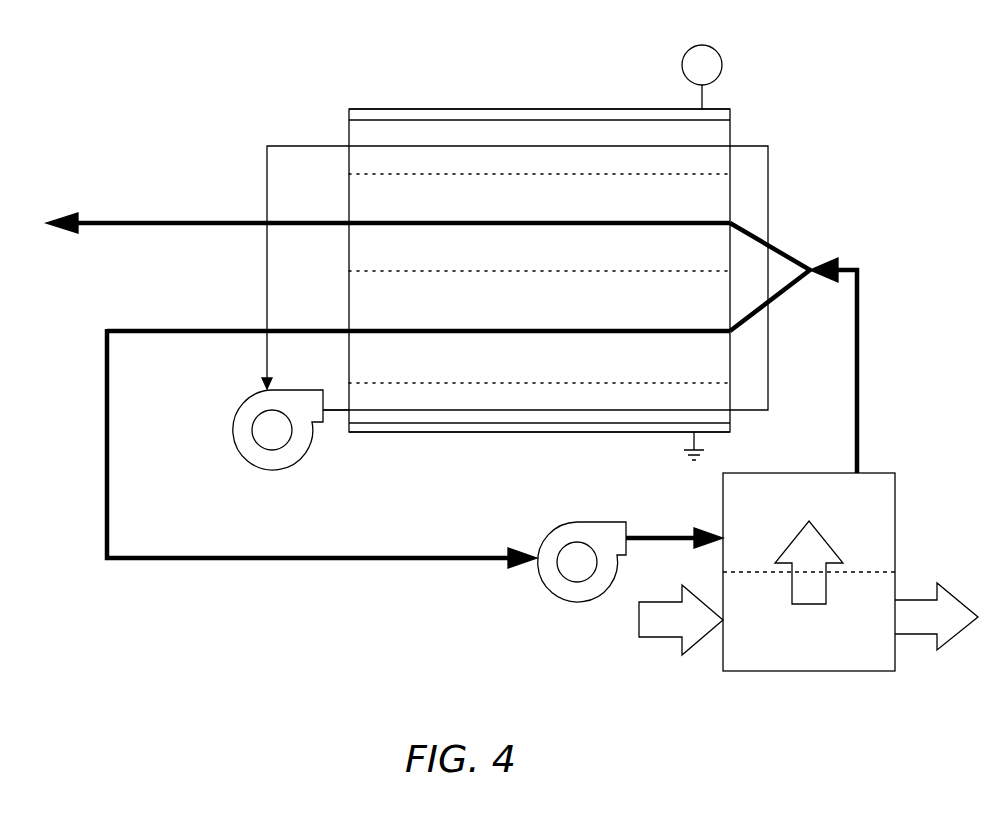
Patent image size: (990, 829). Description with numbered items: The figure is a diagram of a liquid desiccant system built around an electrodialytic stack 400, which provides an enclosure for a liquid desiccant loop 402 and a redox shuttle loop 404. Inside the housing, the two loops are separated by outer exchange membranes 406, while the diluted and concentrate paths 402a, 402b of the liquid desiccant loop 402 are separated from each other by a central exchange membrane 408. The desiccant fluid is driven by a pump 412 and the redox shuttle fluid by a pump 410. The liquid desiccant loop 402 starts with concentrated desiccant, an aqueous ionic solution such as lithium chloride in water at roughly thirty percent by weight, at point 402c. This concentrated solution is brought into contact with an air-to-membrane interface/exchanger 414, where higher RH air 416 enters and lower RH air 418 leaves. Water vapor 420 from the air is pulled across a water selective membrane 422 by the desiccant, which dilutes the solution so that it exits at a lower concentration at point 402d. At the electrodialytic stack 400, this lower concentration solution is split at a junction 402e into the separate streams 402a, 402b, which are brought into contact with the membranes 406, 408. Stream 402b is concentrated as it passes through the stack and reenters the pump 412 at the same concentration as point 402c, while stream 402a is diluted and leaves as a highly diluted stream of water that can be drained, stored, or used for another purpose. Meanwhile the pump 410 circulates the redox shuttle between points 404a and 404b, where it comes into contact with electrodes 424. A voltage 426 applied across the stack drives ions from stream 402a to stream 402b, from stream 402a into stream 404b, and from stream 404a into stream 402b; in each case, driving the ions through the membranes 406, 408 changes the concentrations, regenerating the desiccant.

The electrodialytic stack 400 is at (555, 432).
The liquid desiccant loop 402 is at (397, 561).
The diluted path 402a is at (461, 226).
The concentrate path 402b is at (461, 334).
The concentrated liquid desiccant point 402c is at (672, 542).
The lower concentration liquid desiccant point 402d is at (840, 268).
The junction 402e is at (811, 278).
The redox shuttle loop 404 is at (338, 412).
The first redox shuttle point 404a is at (477, 412).
The second redox shuttle point 404b is at (560, 125).
The outer exchange membranes 406 is at (418, 174).
The central exchange membrane 408 is at (390, 276).
The pump 410 is at (262, 468).
The pump 412 is at (578, 603).
The air-to-membrane interface/exchanger 414 is at (762, 672).
The higher RH air 416 is at (661, 640).
The lower RH air 418 is at (915, 636).
The water vapor 420 is at (808, 605).
The water selective membrane 422 is at (872, 572).
The electrodes 424 is at (373, 119).
The voltage 426 is at (722, 65).